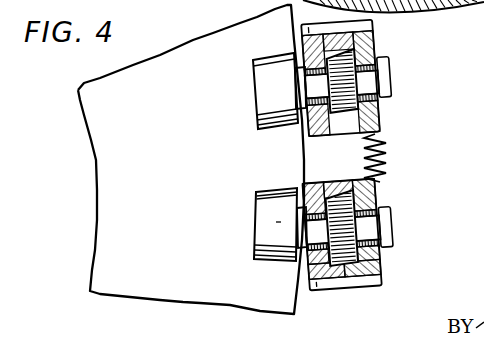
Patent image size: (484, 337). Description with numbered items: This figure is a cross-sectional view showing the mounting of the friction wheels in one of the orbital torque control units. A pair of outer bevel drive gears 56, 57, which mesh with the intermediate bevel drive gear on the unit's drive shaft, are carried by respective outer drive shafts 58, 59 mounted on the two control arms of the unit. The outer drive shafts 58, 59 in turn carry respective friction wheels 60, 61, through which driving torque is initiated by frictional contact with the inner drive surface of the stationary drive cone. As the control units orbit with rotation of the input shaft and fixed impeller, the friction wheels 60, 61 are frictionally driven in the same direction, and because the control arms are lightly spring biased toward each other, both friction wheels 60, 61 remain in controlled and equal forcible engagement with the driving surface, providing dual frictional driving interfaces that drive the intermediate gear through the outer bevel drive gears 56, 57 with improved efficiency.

The outer bevel drive gear 56 is at (341, 272).
The outer bevel drive gear 57 is at (372, 48).
The outer drive shaft 58 is at (370, 230).
The outer drive shaft 59 is at (368, 80).
The friction wheel 60 is at (268, 217).
The friction wheel 61 is at (255, 106).